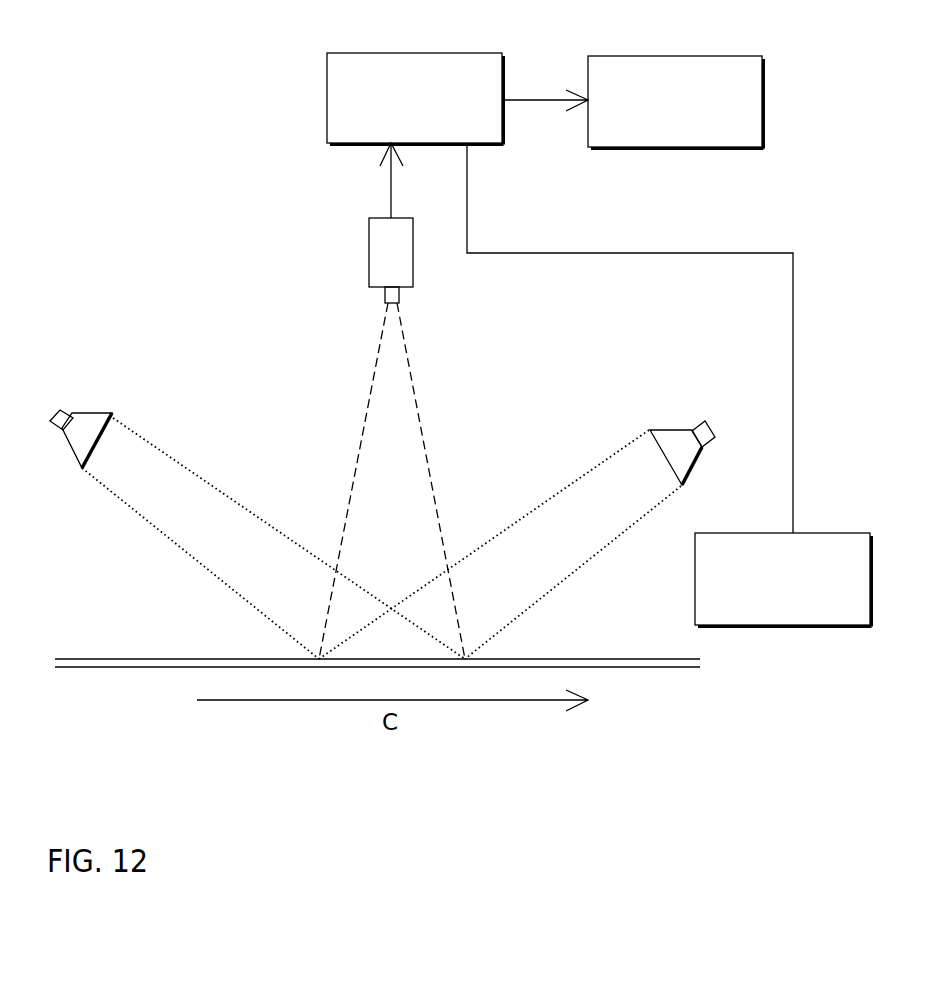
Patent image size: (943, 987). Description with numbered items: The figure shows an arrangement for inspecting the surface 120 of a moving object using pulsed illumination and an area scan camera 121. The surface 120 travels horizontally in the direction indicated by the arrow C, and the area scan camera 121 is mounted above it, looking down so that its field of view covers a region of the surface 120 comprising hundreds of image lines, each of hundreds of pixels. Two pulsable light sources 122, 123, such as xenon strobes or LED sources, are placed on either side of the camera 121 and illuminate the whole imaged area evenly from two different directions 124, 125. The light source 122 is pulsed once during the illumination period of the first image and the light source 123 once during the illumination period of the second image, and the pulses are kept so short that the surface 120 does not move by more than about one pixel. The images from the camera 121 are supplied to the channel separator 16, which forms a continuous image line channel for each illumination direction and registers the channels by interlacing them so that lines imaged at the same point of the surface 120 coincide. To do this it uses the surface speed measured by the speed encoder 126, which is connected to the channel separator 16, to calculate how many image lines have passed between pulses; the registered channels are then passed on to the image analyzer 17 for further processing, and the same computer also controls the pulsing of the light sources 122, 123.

The channel separator 16 is at (355, 45).
The image analyzer 17 is at (628, 53).
The surface 120 is at (545, 654).
The area scan camera 121 is at (367, 220).
The light source 122 is at (87, 405).
The light source 123 is at (683, 420).
The illumination direction 124 is at (198, 490).
The illumination direction 125 is at (582, 492).
The speed encoder 126 is at (787, 531).